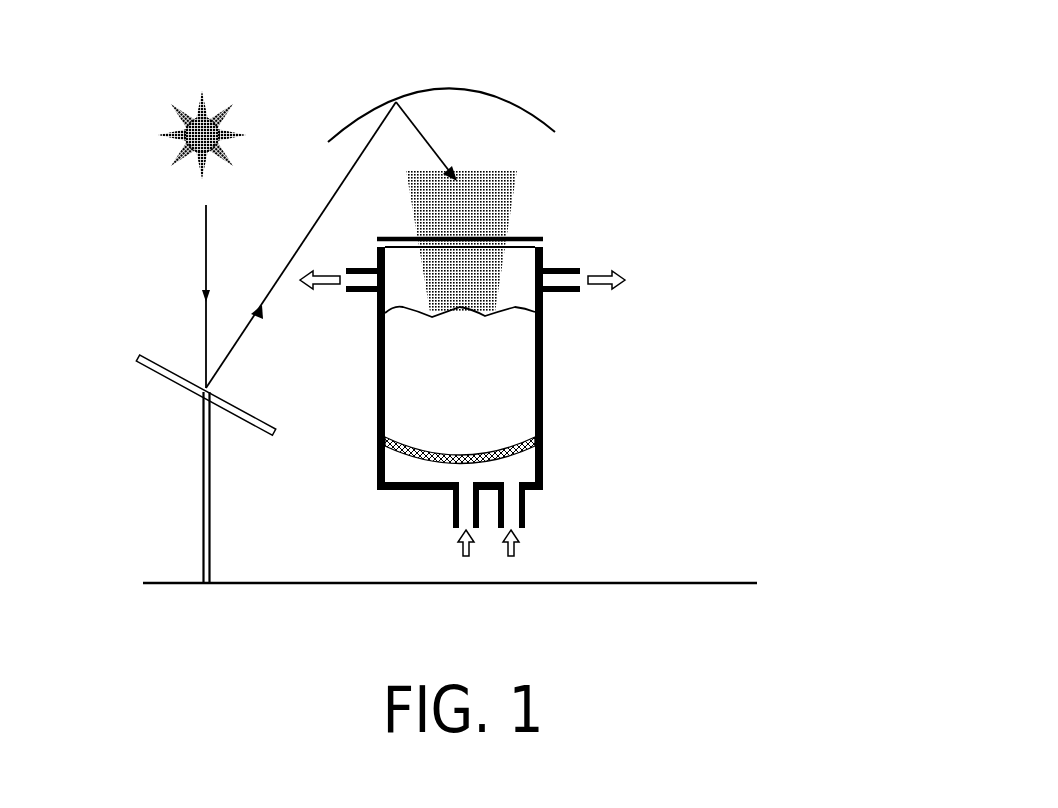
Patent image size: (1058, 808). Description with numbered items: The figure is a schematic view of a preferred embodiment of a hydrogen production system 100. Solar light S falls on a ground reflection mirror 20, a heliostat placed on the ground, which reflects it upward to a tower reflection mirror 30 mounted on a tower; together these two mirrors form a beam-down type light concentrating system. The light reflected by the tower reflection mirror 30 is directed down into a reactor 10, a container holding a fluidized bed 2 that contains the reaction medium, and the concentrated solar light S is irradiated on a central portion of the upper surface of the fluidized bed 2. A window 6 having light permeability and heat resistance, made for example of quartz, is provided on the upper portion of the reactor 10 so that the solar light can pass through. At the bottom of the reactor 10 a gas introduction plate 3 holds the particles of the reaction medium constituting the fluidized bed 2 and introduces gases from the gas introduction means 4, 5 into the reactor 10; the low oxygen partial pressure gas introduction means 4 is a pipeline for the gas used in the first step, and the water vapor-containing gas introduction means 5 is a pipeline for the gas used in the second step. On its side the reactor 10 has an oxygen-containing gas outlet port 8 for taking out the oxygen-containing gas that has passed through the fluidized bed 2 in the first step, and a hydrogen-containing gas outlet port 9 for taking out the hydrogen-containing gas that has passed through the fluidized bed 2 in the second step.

The hydrogen production system 100 is at (762, 35).
The solar light S is at (186, 124).
The tower reflection mirror 30 is at (445, 91).
The ground reflection mirror 20 is at (226, 396).
The reactor 10 is at (543, 414).
The window 6 is at (515, 236).
The fluidized bed 2 is at (518, 327).
The oxygen-containing gas outlet port 8 is at (366, 293).
The hydrogen-containing gas outlet port 9 is at (556, 266).
The gas introduction plate 3 is at (498, 462).
The low oxygen partial pressure gas introduction means 4 is at (453, 515).
The water vapor-containing gas introduction means 5 is at (526, 508).